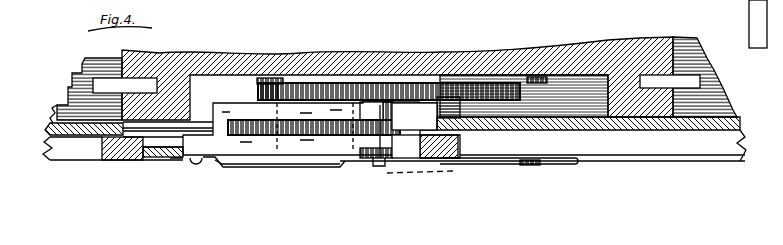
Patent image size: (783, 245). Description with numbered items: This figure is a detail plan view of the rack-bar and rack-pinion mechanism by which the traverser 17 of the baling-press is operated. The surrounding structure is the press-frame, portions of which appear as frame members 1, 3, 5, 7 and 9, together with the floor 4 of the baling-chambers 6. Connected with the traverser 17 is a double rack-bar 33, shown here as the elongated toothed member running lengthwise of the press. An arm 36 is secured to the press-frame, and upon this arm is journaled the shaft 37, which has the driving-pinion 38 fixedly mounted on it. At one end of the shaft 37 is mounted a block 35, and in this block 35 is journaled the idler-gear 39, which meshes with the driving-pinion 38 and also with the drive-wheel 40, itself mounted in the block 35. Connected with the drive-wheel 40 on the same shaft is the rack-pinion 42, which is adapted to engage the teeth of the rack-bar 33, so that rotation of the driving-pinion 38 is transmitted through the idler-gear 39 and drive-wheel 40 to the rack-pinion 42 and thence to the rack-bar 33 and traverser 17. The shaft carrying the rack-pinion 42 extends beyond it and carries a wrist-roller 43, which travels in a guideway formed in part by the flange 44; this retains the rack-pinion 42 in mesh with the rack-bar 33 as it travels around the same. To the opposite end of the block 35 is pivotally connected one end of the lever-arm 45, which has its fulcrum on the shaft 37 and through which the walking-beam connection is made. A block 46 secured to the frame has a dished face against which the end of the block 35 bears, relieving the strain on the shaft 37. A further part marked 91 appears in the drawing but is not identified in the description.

The frame 1 is at (128, 141).
The frame 3 is at (611, 0).
The floor 4 is at (74, 88).
The frame 5 is at (101, 151).
The baling-chambers 6 is at (540, 132).
The frame 7 is at (543, 145).
The frame 9 is at (101, 88).
The traverser 17 is at (531, 66).
The double rack-bar 33 is at (421, 92).
The block 35 is at (263, 105).
The arm 36 is at (381, 104).
The shaft 37 is at (453, 172).
The driving-pinion 38 is at (399, 121).
The idler-gear 39 is at (338, 120).
The drive-wheel 40 is at (274, 95).
The rack-pinion 42 is at (257, 82).
The wrist-roller 43 is at (396, 83).
The flange 44 is at (250, 120).
The lever-arm 45 is at (578, 163).
The block 46 is at (148, 158).
The right slide member 91 is at (700, 77).